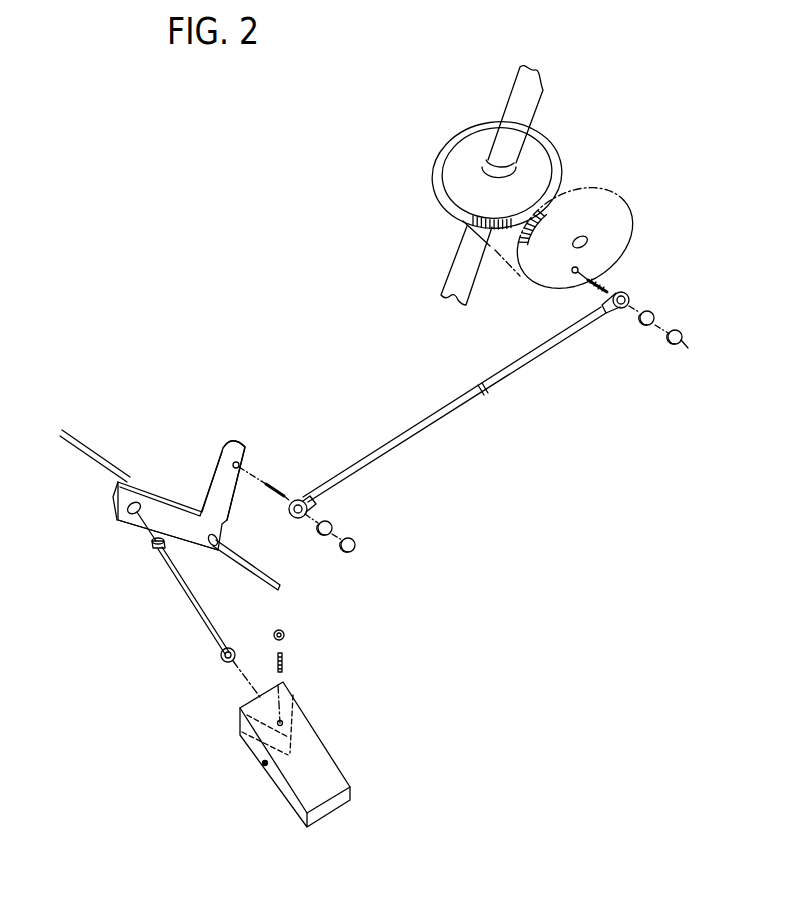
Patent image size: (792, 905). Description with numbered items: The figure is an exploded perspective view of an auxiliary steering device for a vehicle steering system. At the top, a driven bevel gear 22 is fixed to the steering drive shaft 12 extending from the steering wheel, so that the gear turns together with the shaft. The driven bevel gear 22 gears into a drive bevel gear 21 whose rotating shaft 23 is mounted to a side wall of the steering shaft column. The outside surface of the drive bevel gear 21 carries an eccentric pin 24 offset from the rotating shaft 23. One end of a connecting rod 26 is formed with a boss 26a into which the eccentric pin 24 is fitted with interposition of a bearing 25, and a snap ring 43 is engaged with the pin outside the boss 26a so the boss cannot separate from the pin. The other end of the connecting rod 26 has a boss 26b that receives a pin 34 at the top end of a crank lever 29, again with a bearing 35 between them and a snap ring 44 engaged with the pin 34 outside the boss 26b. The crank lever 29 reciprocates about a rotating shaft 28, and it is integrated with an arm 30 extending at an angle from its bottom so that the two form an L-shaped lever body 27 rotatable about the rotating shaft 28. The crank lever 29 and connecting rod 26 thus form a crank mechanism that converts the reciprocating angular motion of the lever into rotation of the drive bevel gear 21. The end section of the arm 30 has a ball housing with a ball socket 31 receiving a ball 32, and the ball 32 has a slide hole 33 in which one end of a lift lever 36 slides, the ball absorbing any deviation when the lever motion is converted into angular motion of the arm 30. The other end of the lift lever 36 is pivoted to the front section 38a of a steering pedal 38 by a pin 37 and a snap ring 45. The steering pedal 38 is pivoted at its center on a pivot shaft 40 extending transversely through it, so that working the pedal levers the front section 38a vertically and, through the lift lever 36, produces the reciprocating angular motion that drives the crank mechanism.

The steering drive shaft 12 is at (515, 98).
The drive bevel gear 21 is at (612, 190).
The driven bevel gear 22 is at (550, 130).
The rotating shaft 23 is at (625, 242).
The eccentric pin 24 is at (607, 288).
The bearing 25 is at (650, 307).
The connecting rod 26 is at (517, 370).
The boss 26a is at (627, 291).
The boss 26b is at (300, 498).
The L-shaped lever body 27 is at (213, 360).
The rotating shaft 28 is at (339, 567).
The crank lever 29 is at (213, 440).
The arm 30 is at (147, 493).
The ball socket 31 is at (131, 516).
The ball 32 is at (156, 553).
The slide hole 33 is at (180, 555).
The pin 34 is at (268, 482).
The bearing 35 is at (333, 517).
The lift lever 36 is at (184, 592).
The pin 37 is at (284, 662).
The steering pedal 38 is at (310, 692).
The front section 38a is at (247, 703).
The pivot shaft 40 is at (265, 765).
The snap ring 43 is at (682, 329).
The snap ring 44 is at (353, 537).
The snap ring 45 is at (287, 634).